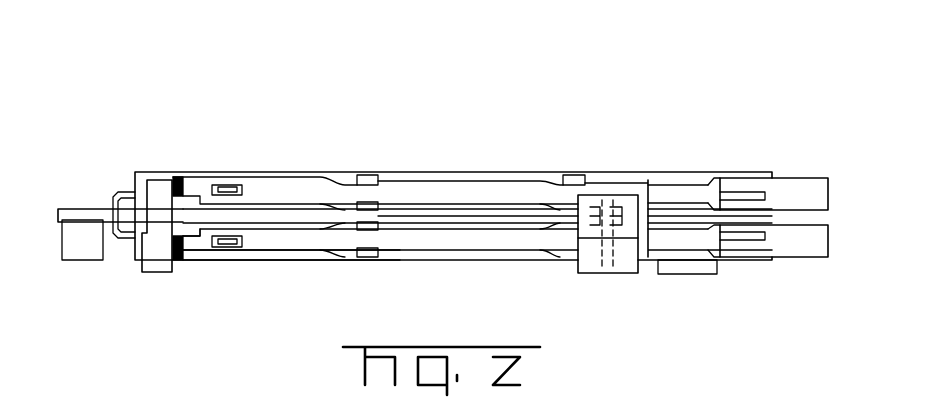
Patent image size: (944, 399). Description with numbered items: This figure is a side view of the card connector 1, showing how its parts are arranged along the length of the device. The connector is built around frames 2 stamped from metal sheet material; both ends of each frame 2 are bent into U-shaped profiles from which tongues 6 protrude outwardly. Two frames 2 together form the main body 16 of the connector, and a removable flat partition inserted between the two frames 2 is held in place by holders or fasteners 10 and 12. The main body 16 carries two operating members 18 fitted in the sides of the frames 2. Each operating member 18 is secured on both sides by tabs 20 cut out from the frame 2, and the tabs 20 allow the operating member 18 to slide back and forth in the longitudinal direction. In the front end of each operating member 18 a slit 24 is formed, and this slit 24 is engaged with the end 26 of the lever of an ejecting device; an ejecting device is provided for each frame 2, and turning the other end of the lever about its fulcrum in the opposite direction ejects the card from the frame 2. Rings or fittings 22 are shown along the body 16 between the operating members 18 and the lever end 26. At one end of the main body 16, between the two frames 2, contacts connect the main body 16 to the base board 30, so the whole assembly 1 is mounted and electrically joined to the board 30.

The connector assembly 1 is at (784, 86).
The frame 2 is at (541, 178).
The tongue 6 is at (628, 205).
The holder 10 is at (152, 263).
The holder 12 is at (627, 270).
The main body 16 is at (400, 264).
The operating member 18 is at (712, 205).
The tab 20 is at (383, 258).
The retaining ring 22 is at (197, 183).
The slit 24 is at (245, 188).
The end of the lever 26 is at (235, 258).
The base board 30 is at (85, 206).